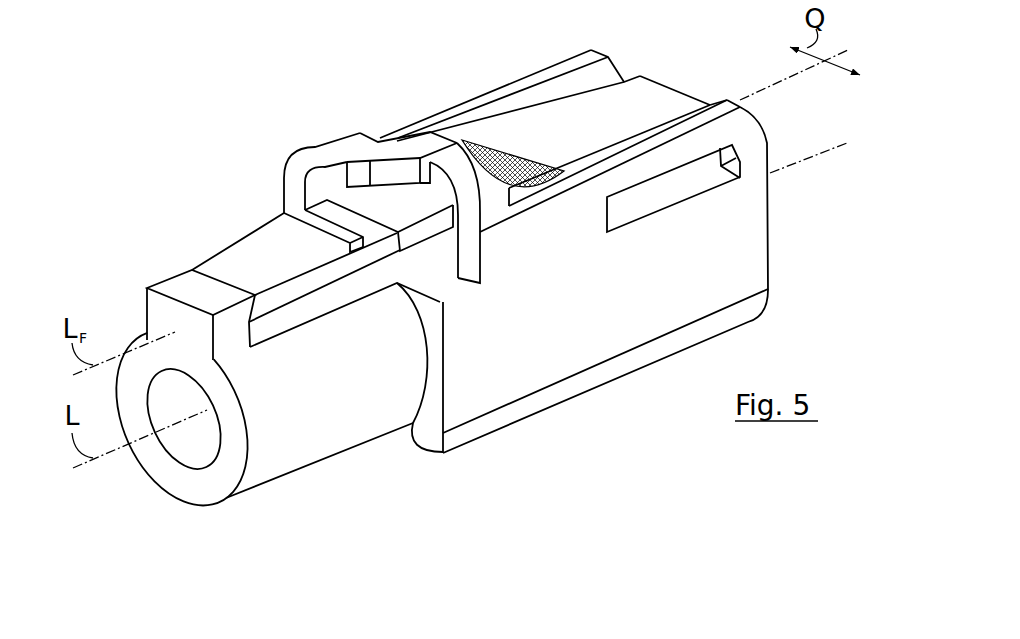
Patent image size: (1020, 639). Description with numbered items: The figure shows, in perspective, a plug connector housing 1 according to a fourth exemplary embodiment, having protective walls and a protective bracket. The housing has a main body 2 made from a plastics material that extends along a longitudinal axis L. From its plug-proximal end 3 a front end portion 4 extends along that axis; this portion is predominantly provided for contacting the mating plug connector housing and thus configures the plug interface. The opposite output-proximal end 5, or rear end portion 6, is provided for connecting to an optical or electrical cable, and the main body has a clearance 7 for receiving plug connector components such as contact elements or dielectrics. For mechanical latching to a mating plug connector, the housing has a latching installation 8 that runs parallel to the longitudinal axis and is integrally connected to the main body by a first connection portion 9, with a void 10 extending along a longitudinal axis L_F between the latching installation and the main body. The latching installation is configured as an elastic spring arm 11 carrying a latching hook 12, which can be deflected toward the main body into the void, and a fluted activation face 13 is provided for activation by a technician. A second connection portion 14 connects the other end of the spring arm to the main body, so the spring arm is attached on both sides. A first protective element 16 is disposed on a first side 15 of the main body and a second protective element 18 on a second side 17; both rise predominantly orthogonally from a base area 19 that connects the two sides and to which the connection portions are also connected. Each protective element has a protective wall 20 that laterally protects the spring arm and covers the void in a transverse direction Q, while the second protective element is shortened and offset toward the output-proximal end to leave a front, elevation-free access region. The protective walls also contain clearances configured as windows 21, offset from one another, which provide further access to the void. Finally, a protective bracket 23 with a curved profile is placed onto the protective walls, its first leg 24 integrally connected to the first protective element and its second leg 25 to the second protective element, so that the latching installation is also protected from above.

The plug connector housing 1 is at (119, 102).
The main body 2 is at (758, 278).
The plug-proximal end 3 is at (147, 285).
The front end portion 4 is at (182, 503).
The output-proximal end 5 is at (641, 74).
The rear end portion 6 is at (683, 357).
The clearance 7 is at (176, 448).
The latching installation 8 is at (212, 265).
The first connection portion 9 is at (157, 321).
The void 10 is at (405, 273).
The spring arm 11 is at (300, 193).
The latching hook 12 is at (273, 222).
The fluted activation face 13 is at (538, 148).
The second connection portion 14 is at (688, 101).
The first side 15 is at (437, 110).
The first protective element 16 is at (517, 81).
The second side 17 is at (630, 266).
The second protective element 18 is at (729, 99).
The base area 19 is at (440, 268).
The protective wall 20 is at (620, 150).
The window 21 is at (723, 167).
The protective bracket 23 is at (397, 143).
The first leg 24 is at (309, 156).
The second leg 25 is at (487, 204).